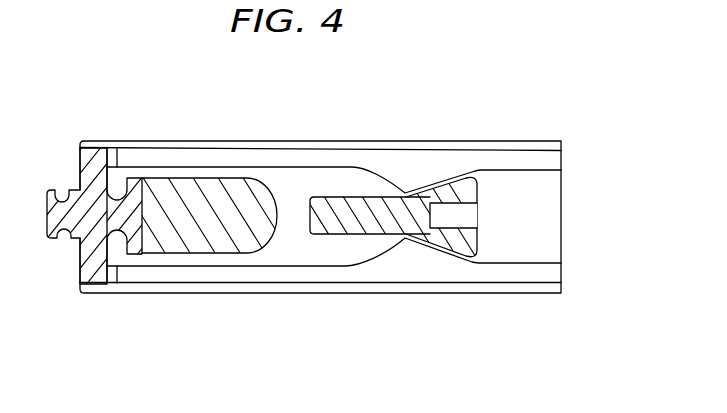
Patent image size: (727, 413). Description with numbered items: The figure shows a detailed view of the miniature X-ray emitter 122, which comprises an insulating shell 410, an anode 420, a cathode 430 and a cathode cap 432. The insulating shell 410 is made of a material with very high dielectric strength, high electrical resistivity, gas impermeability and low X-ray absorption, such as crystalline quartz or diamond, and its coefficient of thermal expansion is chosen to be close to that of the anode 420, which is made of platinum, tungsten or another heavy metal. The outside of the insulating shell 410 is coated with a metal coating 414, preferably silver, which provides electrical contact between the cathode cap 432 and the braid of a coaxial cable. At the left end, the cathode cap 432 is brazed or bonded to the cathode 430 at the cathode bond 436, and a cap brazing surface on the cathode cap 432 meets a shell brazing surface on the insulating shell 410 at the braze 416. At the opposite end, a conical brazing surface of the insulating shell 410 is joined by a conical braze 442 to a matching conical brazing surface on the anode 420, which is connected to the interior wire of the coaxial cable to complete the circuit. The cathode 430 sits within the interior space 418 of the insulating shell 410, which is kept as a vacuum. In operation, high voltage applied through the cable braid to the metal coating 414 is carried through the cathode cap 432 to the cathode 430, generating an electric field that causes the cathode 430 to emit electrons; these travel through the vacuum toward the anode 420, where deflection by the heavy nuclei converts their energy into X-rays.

The X-ray emitter 122 is at (447, 76).
The insulating shell 410 is at (515, 273).
The metal coating 414 is at (253, 143).
The braze 416 is at (107, 148).
The interior space 418 is at (315, 188).
The anode 420 is at (362, 222).
The cathode 430 is at (185, 188).
The cathode cap 432 is at (88, 258).
The cathode bond 436 is at (138, 195).
The conical braze 442 is at (437, 182).